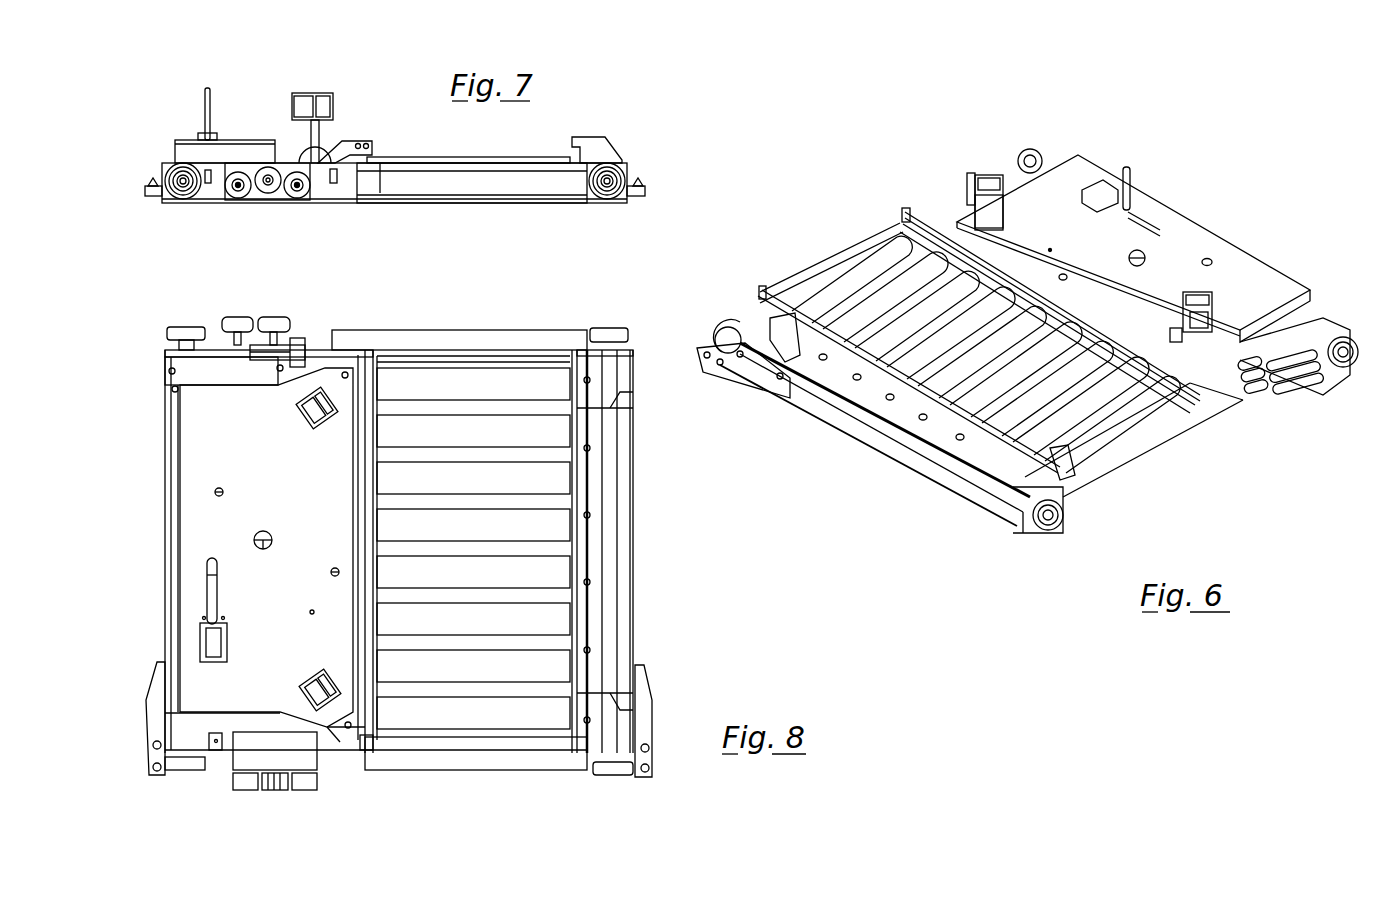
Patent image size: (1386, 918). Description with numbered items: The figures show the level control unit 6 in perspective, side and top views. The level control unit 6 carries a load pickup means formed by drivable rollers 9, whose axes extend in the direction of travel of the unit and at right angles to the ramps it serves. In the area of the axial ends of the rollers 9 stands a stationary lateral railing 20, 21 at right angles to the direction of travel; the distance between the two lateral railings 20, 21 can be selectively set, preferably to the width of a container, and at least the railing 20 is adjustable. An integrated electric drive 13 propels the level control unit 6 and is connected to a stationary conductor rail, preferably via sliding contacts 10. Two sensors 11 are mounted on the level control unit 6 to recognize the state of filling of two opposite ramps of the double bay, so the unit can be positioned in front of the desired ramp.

In FIG. 6, the level control unit 6 is at (821, 126).
In FIG. 8, the drivable rollers 9 is at (475, 385).
In FIG. 6, the drivable rollers 9 is at (1100, 437).
In FIG. 6, the sliding contacts 10 is at (1277, 397).
In FIG. 7, the sensors 11 is at (318, 93).
In FIG. 8, the sensors 11 is at (308, 422).
In FIG. 6, the sensors 11 is at (978, 174).
In FIG. 7, the integrated electric drive 13 is at (268, 188).
In FIG. 7, the lateral railing 20 is at (573, 137).
In FIG. 6, the lateral railing 20 is at (768, 290).
In FIG. 7, the lateral railing 21 is at (372, 140).
In FIG. 6, the lateral railing 21 is at (906, 212).